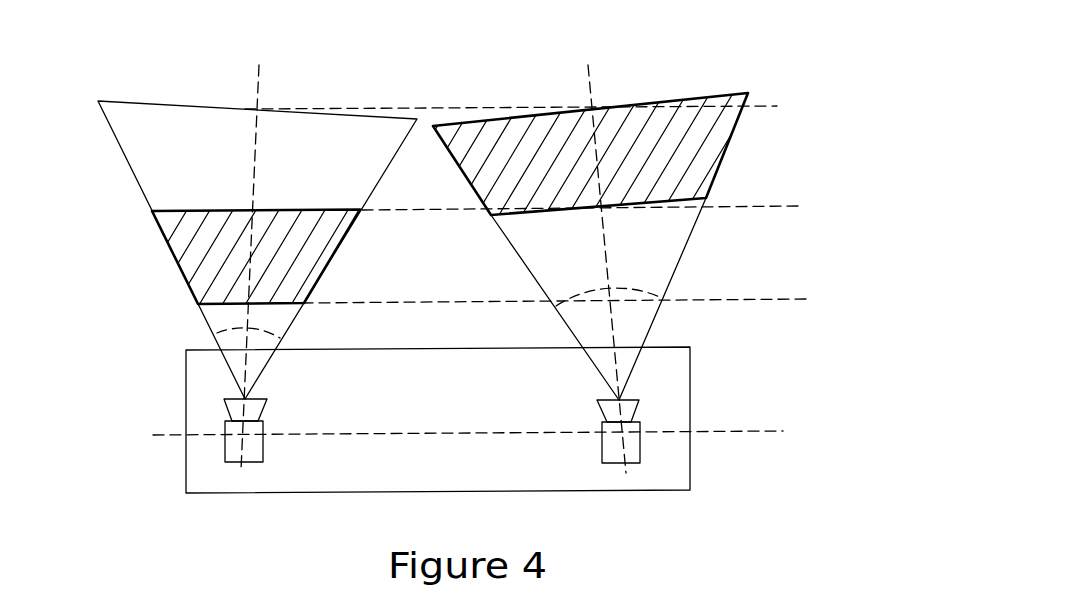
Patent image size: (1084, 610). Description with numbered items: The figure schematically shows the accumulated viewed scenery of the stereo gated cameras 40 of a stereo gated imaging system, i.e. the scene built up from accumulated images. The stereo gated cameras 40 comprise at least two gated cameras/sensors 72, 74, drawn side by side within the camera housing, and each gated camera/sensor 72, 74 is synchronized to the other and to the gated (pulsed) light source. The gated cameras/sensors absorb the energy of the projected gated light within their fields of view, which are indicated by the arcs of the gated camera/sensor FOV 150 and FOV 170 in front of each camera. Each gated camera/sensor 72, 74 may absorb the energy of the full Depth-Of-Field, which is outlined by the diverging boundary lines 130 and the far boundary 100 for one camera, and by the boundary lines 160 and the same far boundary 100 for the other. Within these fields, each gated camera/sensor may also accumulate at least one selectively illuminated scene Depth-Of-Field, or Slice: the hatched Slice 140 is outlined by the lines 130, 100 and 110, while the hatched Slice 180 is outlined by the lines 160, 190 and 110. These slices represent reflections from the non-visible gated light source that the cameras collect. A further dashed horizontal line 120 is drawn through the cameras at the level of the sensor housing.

The stereo gated cameras 40 is at (692, 363).
The gated camera/sensor 72 is at (642, 447).
The gated camera/sensor 74 is at (225, 447).
The Depth-Of-Field boundary 100 is at (770, 106).
The Slice boundary 110 is at (757, 205).
The camera plane 120 is at (772, 431).
The Depth-Of-Field outline 130 is at (492, 251).
The selectively illuminated scene Depth-Of-Field (Slice) 140 is at (673, 161).
The gated camera/sensor FOV 150 is at (637, 293).
The Depth-Of-Field outline 160 is at (170, 251).
The gated camera/sensor FOV 170 is at (212, 325).
The selectively illuminated scene Depth-Of-Field (Slice) 180 is at (232, 256).
The Slice boundary 190 is at (807, 300).